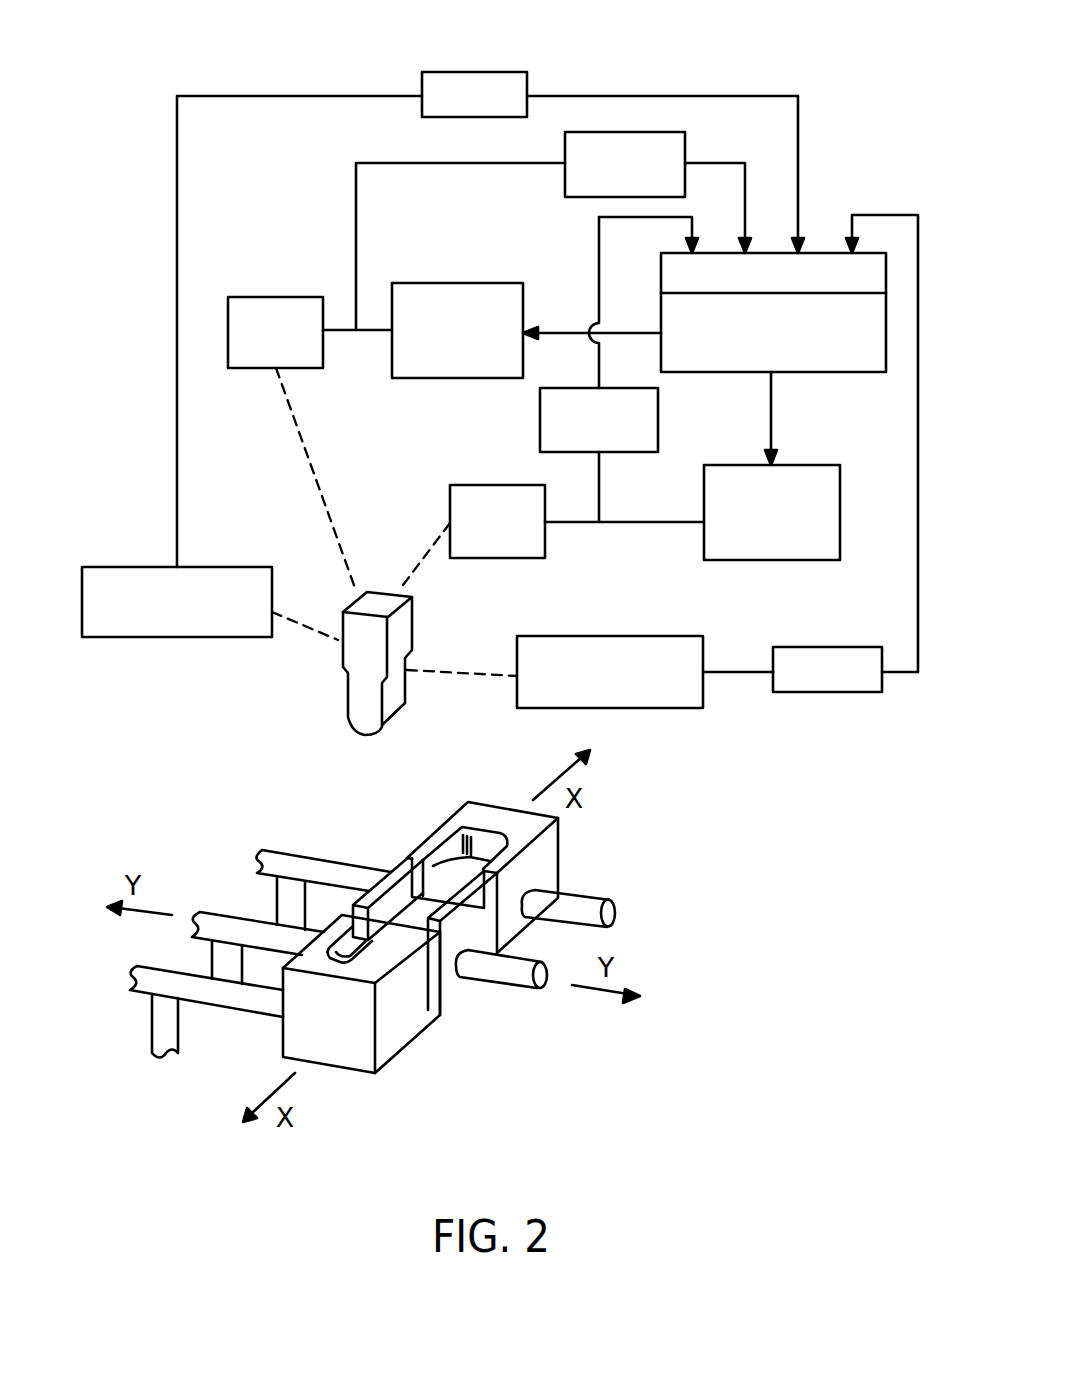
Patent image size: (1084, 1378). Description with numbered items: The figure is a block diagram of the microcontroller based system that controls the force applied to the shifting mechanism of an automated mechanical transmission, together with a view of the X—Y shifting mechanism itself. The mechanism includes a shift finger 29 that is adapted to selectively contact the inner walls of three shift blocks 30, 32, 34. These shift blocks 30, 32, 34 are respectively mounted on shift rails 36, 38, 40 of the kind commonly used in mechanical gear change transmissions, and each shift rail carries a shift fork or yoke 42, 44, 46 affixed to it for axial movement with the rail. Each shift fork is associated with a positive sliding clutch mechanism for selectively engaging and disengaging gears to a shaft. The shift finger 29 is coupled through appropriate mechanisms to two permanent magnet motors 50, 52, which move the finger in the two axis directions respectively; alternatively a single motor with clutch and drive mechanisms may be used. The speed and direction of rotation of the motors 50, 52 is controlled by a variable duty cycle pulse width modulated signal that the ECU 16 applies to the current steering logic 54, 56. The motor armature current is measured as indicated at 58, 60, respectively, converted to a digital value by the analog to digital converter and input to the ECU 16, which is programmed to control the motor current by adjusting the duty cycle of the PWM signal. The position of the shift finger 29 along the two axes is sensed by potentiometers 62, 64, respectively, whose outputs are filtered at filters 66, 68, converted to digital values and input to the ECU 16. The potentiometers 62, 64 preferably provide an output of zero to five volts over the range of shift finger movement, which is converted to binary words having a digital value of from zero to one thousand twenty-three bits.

The ECU 16 is at (853, 372).
The shift finger 29 is at (398, 632).
The shift block 30 is at (347, 1053).
The shift block 32 is at (478, 983).
The shift block 34 is at (815, 252).
The shift rail 36 is at (253, 1002).
The shift rail 38 is at (197, 920).
The shift rail 40 is at (341, 867).
The shift fork 42 is at (152, 1020).
The shift fork 44 is at (213, 962).
The shift fork 46 is at (277, 903).
The permanent magnet motor 50 is at (472, 485).
The permanent magnet motor 52 is at (252, 297).
The current steering logic 54 is at (767, 560).
The current steering logic 56 is at (463, 283).
The current measure 58 is at (658, 420).
The current measure 60 is at (686, 150).
The potentiometer 62 is at (598, 636).
The potentiometer 64 is at (206, 567).
The filter 66 is at (827, 647).
The filter 68 is at (489, 72).